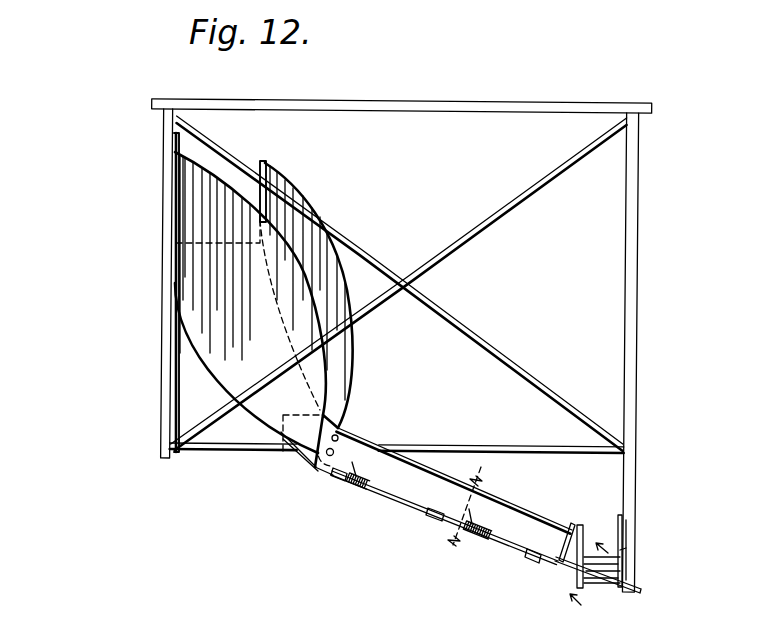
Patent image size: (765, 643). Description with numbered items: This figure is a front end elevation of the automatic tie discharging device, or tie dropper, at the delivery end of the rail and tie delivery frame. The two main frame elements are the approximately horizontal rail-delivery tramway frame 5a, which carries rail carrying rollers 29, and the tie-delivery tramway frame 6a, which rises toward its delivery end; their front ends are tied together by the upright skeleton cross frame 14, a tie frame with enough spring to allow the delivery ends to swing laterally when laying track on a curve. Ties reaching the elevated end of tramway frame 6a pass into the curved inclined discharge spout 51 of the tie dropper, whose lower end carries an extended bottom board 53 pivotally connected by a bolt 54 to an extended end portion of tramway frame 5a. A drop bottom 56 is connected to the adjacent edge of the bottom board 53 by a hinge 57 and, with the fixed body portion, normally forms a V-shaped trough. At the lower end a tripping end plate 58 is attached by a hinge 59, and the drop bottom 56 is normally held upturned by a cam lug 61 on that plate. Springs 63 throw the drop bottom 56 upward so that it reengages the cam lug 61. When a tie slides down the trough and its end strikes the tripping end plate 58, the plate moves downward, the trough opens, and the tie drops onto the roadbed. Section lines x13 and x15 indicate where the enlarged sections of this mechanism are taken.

The upright skeleton cross frame 14 is at (498, 105).
The inclined discharge spout 51 is at (265, 385).
The tramway frame 6a is at (298, 162).
The cam lug 61 is at (566, 532).
The drop bottom 56 is at (409, 497).
The hinge 57 is at (336, 479).
The springs 63 is at (358, 488).
The tripping end plate 58 is at (571, 526).
The hinge 59 is at (581, 531).
The rail carrying rollers 29 is at (600, 566).
The extended bottom board 53 is at (641, 592).
The bolt 54 is at (628, 550).
The tramway frame 5a is at (654, 547).
The section line x13 is at (476, 508).
The section line x15 is at (592, 568).